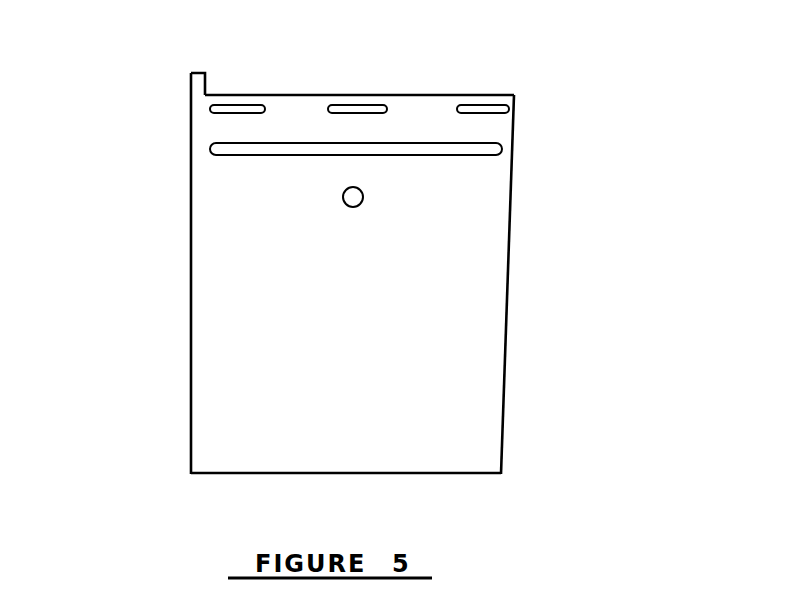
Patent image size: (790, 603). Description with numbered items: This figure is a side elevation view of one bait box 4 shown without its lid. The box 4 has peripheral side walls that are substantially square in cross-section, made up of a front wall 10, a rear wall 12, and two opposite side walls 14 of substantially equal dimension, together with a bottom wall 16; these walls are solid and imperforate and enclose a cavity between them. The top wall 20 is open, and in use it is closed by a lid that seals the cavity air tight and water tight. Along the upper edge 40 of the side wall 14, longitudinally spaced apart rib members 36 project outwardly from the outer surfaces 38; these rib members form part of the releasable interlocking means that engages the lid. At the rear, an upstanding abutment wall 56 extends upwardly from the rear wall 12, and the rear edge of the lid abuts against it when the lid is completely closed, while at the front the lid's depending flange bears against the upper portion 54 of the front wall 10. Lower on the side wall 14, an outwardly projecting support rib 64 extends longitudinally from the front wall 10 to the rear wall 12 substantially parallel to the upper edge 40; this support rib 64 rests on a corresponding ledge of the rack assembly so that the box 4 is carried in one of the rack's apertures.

The front wall 10 is at (511, 232).
The bait box 4 is at (508, 290).
The side walls 14 is at (430, 372).
The rear wall 12 is at (188, 288).
The abutment wall 56 is at (188, 80).
The upper edge 40 is at (395, 95).
The top wall 20 is at (448, 95).
The upper portion 54 is at (500, 95).
The bottom wall 16 is at (445, 478).
The rib members 36 is at (350, 105).
The outer surfaces 38 is at (480, 128).
The support ribs 64 is at (216, 147).